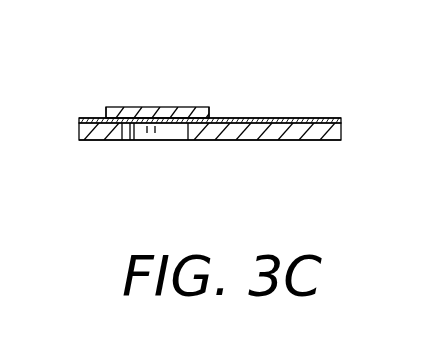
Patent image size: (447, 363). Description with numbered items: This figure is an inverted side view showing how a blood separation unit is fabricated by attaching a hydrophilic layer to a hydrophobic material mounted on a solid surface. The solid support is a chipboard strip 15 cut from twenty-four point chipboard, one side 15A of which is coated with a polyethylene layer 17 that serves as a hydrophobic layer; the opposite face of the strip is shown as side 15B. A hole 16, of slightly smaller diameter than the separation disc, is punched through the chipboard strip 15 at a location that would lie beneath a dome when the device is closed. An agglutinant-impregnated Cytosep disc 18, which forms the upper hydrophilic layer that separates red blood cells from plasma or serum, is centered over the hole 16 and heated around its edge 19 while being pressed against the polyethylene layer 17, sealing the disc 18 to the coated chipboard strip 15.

The chipboard strip 15 is at (84, 145).
The polyethylene coated side 15A is at (331, 111).
The bottom surface of substrate 15B is at (333, 148).
The hole 16 is at (165, 148).
The polyethylene layer 17 is at (251, 112).
The Cytosep disc 18 is at (152, 99).
The edge of Cytosep disc 19 is at (105, 99).